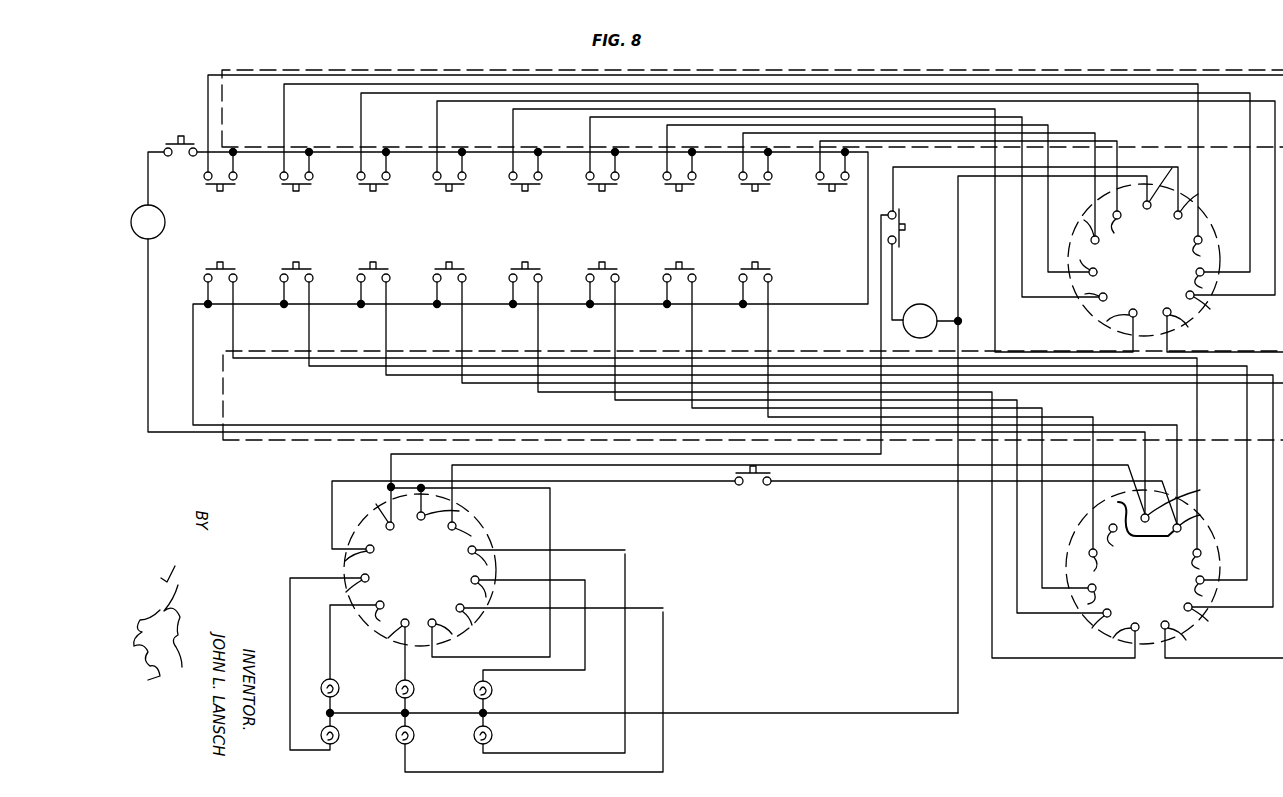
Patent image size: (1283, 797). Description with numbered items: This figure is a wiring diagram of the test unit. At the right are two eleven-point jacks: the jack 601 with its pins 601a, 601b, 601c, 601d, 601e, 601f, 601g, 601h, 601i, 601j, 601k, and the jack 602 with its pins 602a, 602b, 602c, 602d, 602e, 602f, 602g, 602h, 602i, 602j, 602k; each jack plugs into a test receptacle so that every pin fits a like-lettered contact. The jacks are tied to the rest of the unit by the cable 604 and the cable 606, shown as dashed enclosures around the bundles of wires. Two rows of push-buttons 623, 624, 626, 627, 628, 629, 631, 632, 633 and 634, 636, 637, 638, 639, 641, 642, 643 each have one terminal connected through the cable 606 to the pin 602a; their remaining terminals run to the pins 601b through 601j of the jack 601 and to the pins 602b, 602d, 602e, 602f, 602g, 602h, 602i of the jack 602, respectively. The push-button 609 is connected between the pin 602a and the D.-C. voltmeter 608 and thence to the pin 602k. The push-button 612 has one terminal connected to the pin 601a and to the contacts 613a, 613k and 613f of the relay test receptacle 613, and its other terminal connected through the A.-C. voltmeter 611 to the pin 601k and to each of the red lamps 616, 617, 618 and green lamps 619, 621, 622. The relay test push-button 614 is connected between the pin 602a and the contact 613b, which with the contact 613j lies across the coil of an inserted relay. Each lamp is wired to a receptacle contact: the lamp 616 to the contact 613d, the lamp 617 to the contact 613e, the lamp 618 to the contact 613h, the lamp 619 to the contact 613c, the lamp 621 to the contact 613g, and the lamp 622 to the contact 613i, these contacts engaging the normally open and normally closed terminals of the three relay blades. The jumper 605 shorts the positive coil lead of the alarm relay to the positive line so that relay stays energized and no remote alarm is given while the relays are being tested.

The 11-point jack 601 is at (1144, 260).
The pin of jack 601 601a is at (1208, 199).
The pin of jack 601 601b is at (1216, 251).
The pin of jack 601 601c is at (1219, 283).
The pin of jack 601 601d is at (1218, 307).
The pin of jack 601 601e is at (1197, 327).
The pin of jack 601 601f is at (1107, 321).
The pin of jack 601 601g is at (1078, 295).
The pin of jack 601 601h is at (1073, 264).
The pin of jack 601 601i is at (1085, 220).
The pin of jack 601 601j is at (1131, 229).
The pin of jack 601 601k is at (1172, 168).
The 11-point jack 602 is at (1143, 567).
The pin of jack 602 602a is at (1207, 520).
The pin of jack 602 602b is at (1216, 563).
The pin of jack 602 602c is at (1219, 591).
The pin of jack 602 602d is at (1217, 616).
The pin of jack 602 602e is at (1196, 636).
The pin of jack 602 602f is at (1111, 640).
The pin of jack 602 602g is at (1088, 626).
The pin of jack 602 602h is at (1084, 605).
The pin of jack 602 602i is at (1072, 565).
The pin of jack 602 602j is at (1128, 542).
The pin of jack 602 602k is at (1191, 502).
The cable 604 is at (1032, 70).
The jumper 605 is at (1117, 502).
The cable 606 is at (806, 355).
The D.-C. voltmeter 608 is at (165, 221).
The push-button 609 is at (180, 136).
The A.-C. voltmeter 611 is at (928, 304).
The push-button 612 is at (899, 218).
The relay test receptacle 613 is at (420, 570).
The contact of test receptacle 613 613a is at (380, 508).
The contact of test receptacle 613 613b is at (345, 560).
The contact of test receptacle 613 613c is at (346, 592).
The contact of test receptacle 613 613d is at (360, 613).
The contact of test receptacle 613 613e is at (388, 638).
The contact of test receptacle 613 613f is at (452, 634).
The contact of test receptacle 613 613g is at (490, 616).
The contact of test receptacle 613 613h is at (503, 586).
The contact of test receptacle 613 613i is at (499, 558).
The contact of test receptacle 613 613j is at (471, 536).
The contact of test receptacle 613 613k is at (459, 511).
The relay test push-button 614 is at (754, 480).
The red lamp 616 is at (340, 684).
The red lamp 617 is at (415, 685).
The red lamp 618 is at (493, 686).
The green lamp 619 is at (339, 732).
The green lamp 621 is at (414, 732).
The green lamp 622 is at (492, 735).
The push-button 623 is at (229, 188).
The push-button 624 is at (305, 188).
The push-button 626 is at (382, 188).
The push-button 627 is at (458, 188).
The push-button 628 is at (534, 188).
The push-button 629 is at (611, 188).
The push-button 631 is at (688, 188).
The push-button 632 is at (764, 188).
The push-button 633 is at (841, 188).
The push-button 634 is at (221, 265).
The push-button 636 is at (297, 265).
The push-button 637 is at (374, 265).
The push-button 638 is at (450, 265).
The push-button 639 is at (526, 265).
The push-button 641 is at (603, 265).
The push-button 642 is at (680, 265).
The push-button 643 is at (756, 265).